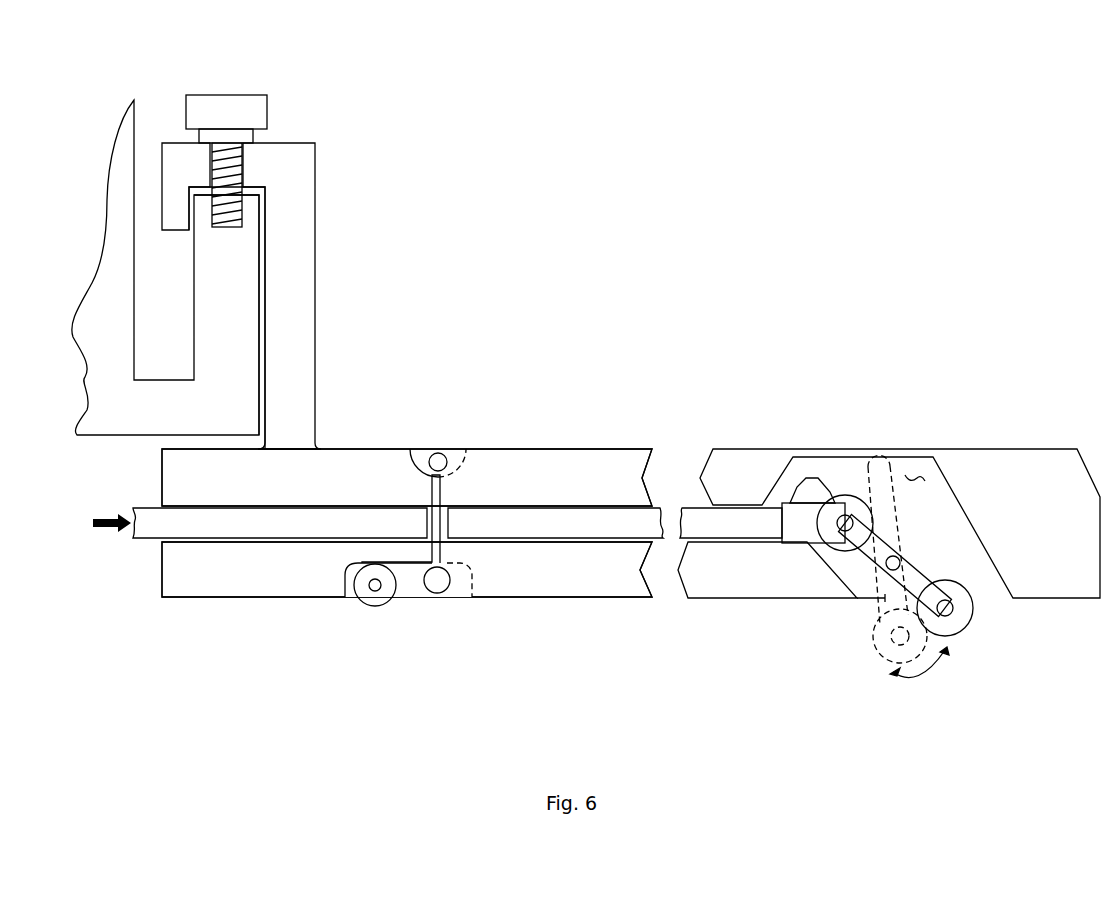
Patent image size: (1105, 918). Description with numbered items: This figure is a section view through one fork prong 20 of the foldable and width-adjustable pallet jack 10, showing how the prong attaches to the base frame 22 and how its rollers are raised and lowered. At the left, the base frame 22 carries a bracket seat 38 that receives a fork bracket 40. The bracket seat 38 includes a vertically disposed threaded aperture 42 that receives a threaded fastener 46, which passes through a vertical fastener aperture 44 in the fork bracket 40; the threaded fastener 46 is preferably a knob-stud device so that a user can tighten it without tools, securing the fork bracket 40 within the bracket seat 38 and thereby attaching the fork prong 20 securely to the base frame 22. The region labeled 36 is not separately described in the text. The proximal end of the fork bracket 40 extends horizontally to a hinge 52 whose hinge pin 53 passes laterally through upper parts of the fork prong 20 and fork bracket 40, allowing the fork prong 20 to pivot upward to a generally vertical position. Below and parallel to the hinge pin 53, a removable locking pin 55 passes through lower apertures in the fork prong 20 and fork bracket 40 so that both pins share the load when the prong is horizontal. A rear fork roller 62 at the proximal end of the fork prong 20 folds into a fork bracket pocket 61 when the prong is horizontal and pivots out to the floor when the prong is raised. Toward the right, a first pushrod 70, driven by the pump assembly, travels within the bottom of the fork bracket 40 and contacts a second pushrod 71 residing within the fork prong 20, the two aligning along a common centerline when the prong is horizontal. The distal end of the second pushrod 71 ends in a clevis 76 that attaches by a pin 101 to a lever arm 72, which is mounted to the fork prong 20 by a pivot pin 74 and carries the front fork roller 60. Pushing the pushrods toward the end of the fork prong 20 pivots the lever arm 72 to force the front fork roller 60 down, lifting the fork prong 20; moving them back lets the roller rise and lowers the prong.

The foldable and width-adjustable pallet jack 10 is at (1008, 160).
The fork prong 20 is at (590, 449).
The base frame 22 is at (103, 272).
The inner block 36 is at (240, 262).
The bracket seat 38 is at (207, 190).
The fork bracket 40 is at (309, 295).
The threaded aperture 42 is at (212, 228).
The vertical fastener aperture 44 is at (208, 165).
The threaded fastener 46 is at (264, 105).
The hinge 52 is at (462, 460).
The hinge pin 53 is at (430, 453).
The locking pin 55 is at (437, 583).
The front fork roller 60 is at (972, 628).
The fork bracket pocket 61 is at (918, 475).
The rear fork roller 62 is at (377, 604).
The first pushrod 70 is at (246, 527).
The second pushrod 71 is at (522, 515).
The lever arm 72 is at (812, 488).
The pivot pin 74 is at (900, 560).
The clevis 76 is at (806, 518).
The pin 101 is at (843, 530).